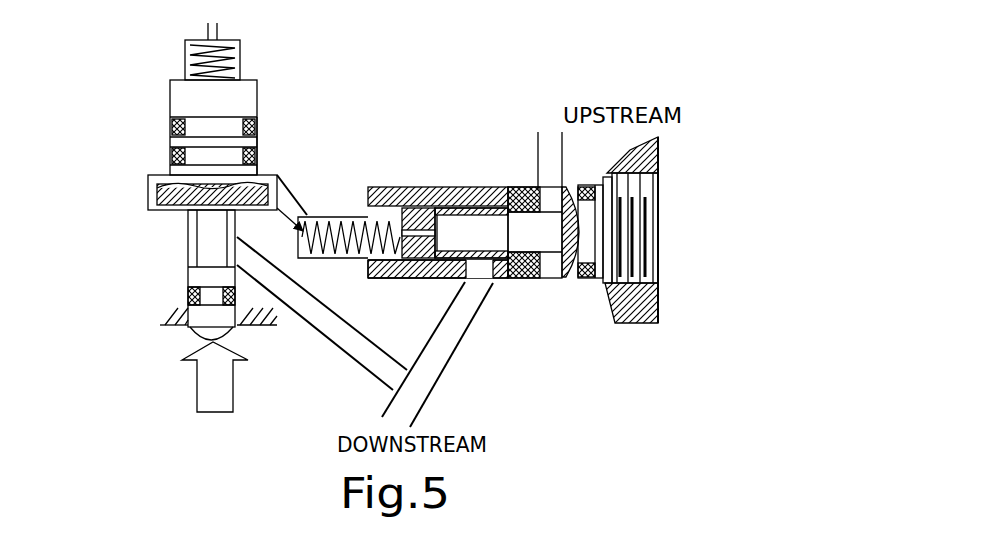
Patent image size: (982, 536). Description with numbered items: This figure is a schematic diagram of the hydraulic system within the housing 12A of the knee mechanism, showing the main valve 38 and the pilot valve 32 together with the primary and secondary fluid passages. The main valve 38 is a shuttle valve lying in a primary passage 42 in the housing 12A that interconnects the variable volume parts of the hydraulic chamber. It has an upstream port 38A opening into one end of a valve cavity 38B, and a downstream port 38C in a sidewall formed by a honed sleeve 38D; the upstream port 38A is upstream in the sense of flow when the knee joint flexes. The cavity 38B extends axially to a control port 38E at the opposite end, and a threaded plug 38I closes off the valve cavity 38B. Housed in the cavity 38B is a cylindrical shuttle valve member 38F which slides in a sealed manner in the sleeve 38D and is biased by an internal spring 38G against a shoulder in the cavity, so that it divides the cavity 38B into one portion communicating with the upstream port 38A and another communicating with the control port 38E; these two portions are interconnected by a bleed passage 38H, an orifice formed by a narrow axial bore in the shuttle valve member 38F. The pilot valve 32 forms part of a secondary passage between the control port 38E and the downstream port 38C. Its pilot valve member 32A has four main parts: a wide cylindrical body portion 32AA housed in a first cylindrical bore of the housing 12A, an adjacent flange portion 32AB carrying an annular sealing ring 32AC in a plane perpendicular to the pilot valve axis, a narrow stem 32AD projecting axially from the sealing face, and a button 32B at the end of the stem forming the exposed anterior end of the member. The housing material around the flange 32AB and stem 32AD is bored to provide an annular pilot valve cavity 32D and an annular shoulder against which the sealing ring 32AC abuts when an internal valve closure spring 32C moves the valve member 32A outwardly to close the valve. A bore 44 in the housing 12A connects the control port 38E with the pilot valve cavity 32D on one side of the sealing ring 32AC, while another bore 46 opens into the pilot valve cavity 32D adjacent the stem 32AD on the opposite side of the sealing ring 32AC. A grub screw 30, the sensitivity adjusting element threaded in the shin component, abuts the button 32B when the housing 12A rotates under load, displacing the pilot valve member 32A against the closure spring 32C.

The housing 12A is at (137, 53).
The grub screw 30 is at (203, 390).
The pilot valve 32 is at (112, 219).
The pilot valve member 32A is at (173, 138).
The body portion 32AA is at (242, 100).
The flange portion 32AB is at (275, 172).
The sealing ring 32AC is at (170, 215).
The stem 32AD is at (210, 250).
The button 32B is at (235, 343).
The valve closure spring 32C is at (240, 60).
The pilot valve cavity 32D is at (153, 193).
The main valve 38 is at (545, 316).
The upstream port 38A is at (560, 187).
The valve cavity 38B is at (527, 223).
The downstream port 38C is at (490, 283).
The honed sleeve 38D is at (389, 182).
The control port 38E is at (313, 213).
The shuttle valve member 38F is at (428, 186).
The internal spring 38G is at (328, 258).
The bleed passage 38H is at (473, 188).
The threaded plug 38I is at (647, 213).
The primary passage 42 is at (435, 363).
The bore 44 is at (307, 215).
The bore 46 is at (333, 348).